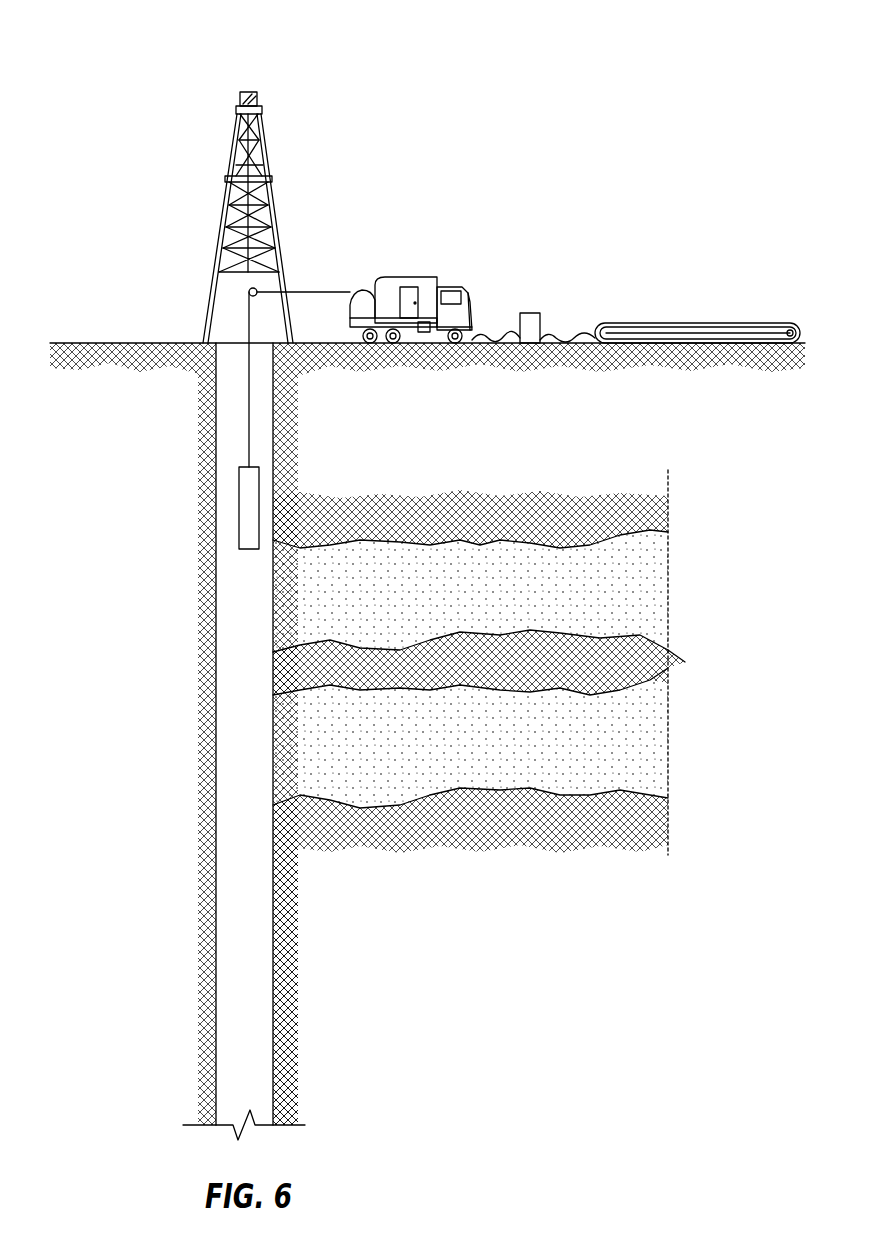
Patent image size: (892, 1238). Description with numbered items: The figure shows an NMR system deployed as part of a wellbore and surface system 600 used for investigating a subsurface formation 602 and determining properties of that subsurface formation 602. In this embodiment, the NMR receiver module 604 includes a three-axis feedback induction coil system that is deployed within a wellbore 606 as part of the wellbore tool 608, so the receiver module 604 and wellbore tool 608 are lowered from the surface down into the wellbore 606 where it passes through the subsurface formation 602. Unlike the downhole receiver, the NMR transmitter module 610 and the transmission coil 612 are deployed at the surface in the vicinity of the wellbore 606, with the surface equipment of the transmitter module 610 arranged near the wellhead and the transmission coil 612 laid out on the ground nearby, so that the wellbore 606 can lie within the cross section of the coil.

The wellbore and surface system 600 is at (402, 46).
The subsurface formation 602 is at (495, 604).
The NMR receiver module 604 is at (160, 503).
The wellbore 606 is at (238, 730).
The wellbore tool 608 is at (238, 507).
The NMR transmitter module 610 is at (805, 250).
The transmission coil 612 is at (668, 323).